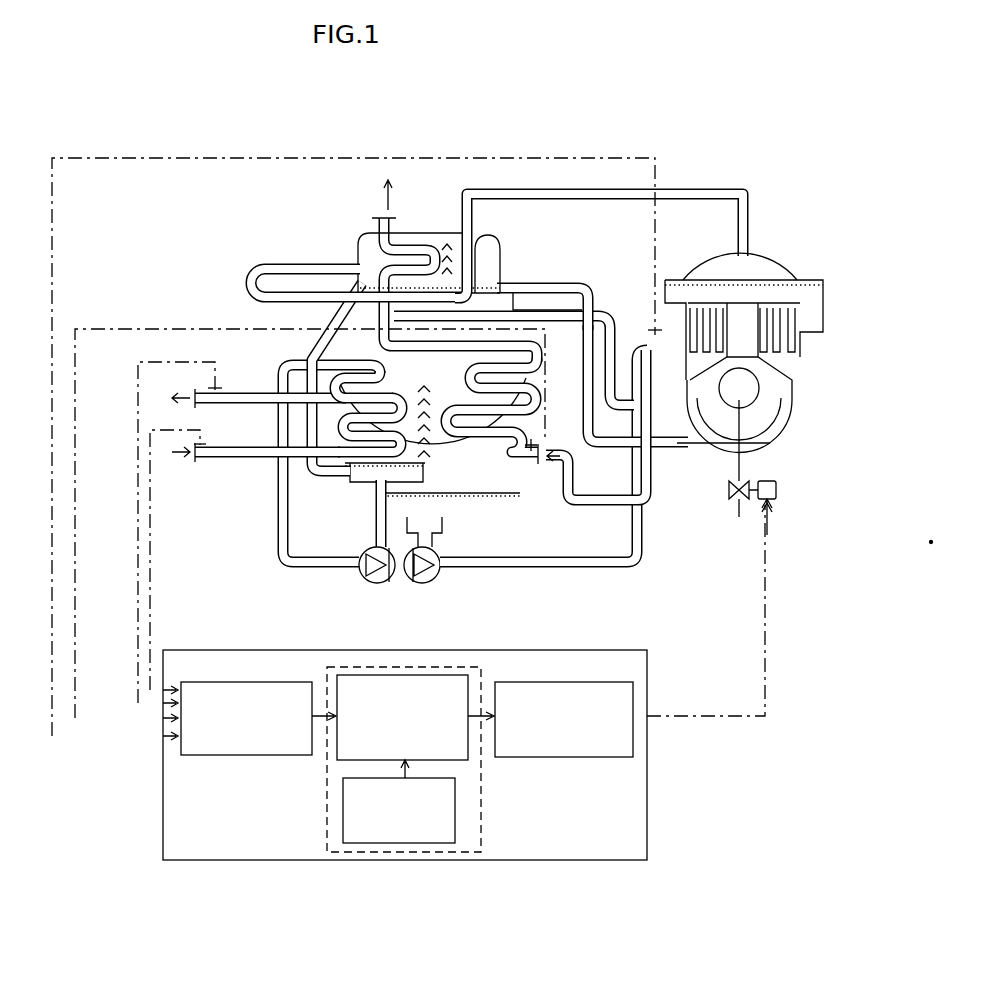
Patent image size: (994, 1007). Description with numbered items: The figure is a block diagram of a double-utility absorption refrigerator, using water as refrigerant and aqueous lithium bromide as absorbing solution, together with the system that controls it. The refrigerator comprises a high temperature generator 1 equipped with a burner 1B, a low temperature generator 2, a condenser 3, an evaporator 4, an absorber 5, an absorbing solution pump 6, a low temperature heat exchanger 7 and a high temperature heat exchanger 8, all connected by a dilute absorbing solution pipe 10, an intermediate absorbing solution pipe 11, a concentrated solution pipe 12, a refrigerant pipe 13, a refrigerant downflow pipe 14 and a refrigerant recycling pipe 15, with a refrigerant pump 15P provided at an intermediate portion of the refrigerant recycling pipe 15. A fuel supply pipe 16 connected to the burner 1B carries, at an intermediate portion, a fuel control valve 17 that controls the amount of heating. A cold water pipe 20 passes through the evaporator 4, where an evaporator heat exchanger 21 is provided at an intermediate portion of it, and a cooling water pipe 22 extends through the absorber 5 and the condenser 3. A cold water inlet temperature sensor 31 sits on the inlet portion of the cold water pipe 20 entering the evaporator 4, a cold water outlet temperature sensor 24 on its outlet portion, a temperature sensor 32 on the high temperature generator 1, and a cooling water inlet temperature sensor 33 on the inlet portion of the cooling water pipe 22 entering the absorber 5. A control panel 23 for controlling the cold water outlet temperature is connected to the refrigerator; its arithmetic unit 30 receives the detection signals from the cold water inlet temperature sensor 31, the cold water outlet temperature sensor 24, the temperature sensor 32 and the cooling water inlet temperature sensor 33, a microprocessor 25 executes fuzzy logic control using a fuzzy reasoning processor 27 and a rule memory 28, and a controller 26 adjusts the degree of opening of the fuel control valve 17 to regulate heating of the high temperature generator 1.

The high temperature generator 1 is at (790, 422).
The burner 1B is at (760, 383).
The low temperature generator 2 is at (503, 248).
The condenser 3 is at (373, 238).
The evaporator 4 is at (337, 383).
The absorber 5 is at (490, 473).
The absorbing solution pump 6 is at (440, 577).
The low temperature heat exchanger 7 is at (648, 500).
The high temperature heat exchanger 8 is at (648, 412).
The dilute absorbing solution pipe 10 is at (612, 567).
The intermediate absorbing solution pipe 11 is at (634, 308).
The concentrated solution pipe 12 is at (552, 300).
The refrigerant pipe 13 is at (622, 190).
The refrigerant downflow pipe 14 is at (305, 338).
The refrigerant recycling pipe 15 is at (282, 552).
The refrigerant pump 15P is at (366, 577).
The fuel supply pipe 16 is at (746, 473).
The fuel control valve 17 is at (777, 490).
The cold water pipe 20 is at (237, 463).
The evaporator heat exchanger 21 is at (340, 428).
The cooling water pipe 22 is at (522, 467).
The control panel 23 is at (203, 860).
The cold water outlet temperature sensor 24 is at (215, 385).
The microprocessor 25 is at (357, 852).
The controller 26 is at (612, 757).
The fuzzy reasoning processor 27 is at (345, 762).
The rule memory 28 is at (428, 844).
The arithmetic unit 30 is at (200, 757).
The cold water inlet temperature sensor 31 is at (200, 448).
The temperature sensor 32 is at (657, 300).
The cooling water inlet temperature sensor 33 is at (540, 443).